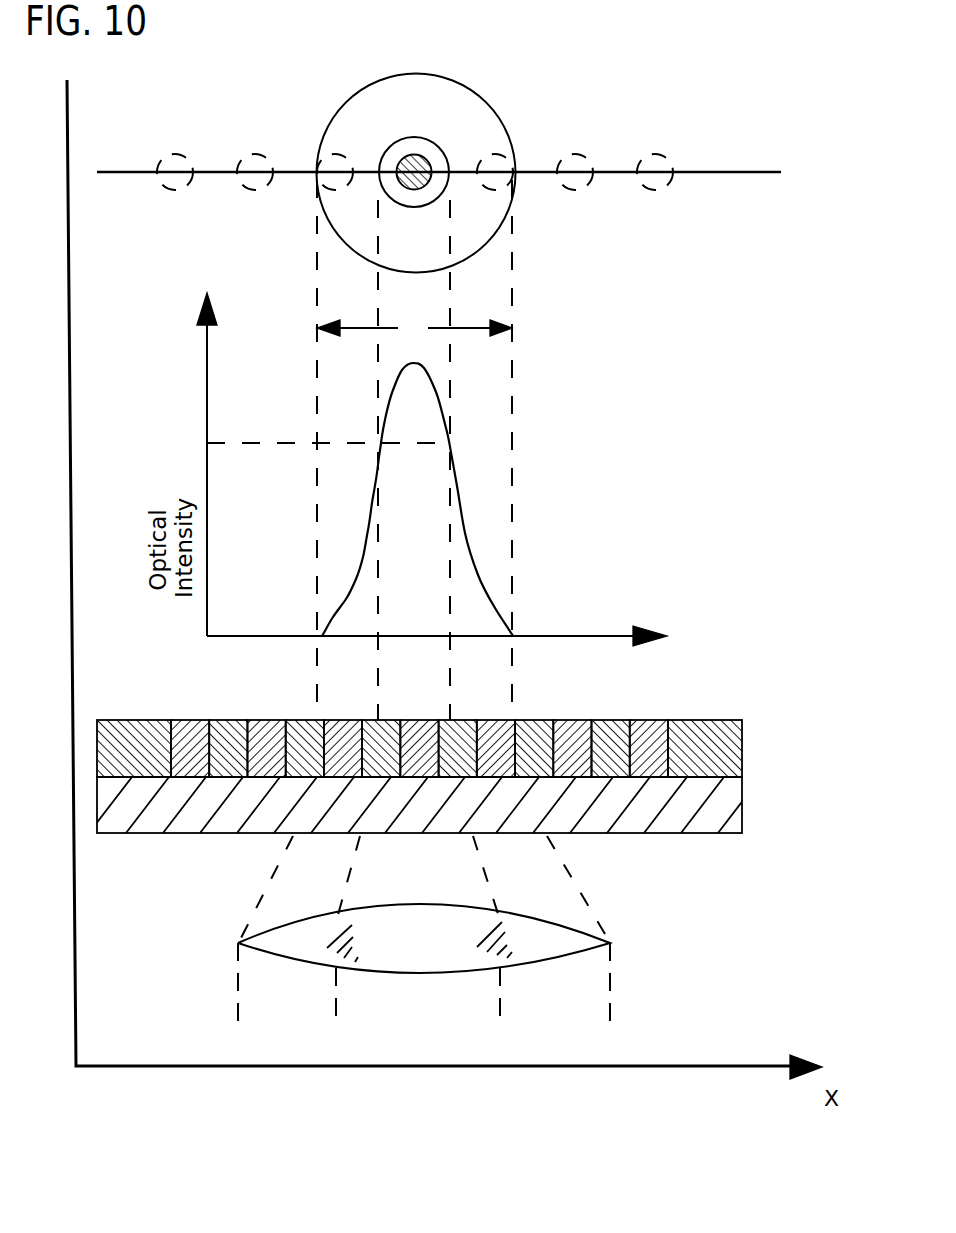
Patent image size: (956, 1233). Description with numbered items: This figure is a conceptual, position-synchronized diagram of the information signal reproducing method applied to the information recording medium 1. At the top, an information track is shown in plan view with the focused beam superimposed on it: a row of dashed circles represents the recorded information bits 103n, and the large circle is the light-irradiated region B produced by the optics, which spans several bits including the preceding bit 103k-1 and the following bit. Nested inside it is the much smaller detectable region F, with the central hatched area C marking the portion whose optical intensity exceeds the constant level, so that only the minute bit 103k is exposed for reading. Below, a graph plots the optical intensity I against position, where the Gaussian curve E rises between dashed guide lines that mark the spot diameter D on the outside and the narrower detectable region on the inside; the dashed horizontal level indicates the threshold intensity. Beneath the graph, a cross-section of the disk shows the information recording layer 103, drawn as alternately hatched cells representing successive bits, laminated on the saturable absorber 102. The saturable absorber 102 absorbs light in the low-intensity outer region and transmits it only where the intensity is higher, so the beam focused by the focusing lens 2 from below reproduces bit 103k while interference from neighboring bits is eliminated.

The information recording medium 1 is at (582, 888).
The focusing lens 2 is at (553, 950).
The saturable absorber 102 is at (740, 824).
The information recording layer 103 is at (740, 765).
The information bits 103n is at (650, 720).
The information bit k 103k is at (430, 181).
The preceding information bit 103k-1 is at (336, 190).
The light-irradiated region B is at (362, 90).
The detectable region C is at (432, 156).
The detectable region F is at (447, 163).
The optical intensity curve E is at (462, 514).
The spot diameter D is at (414, 330).
The optical intensity I is at (317, 445).